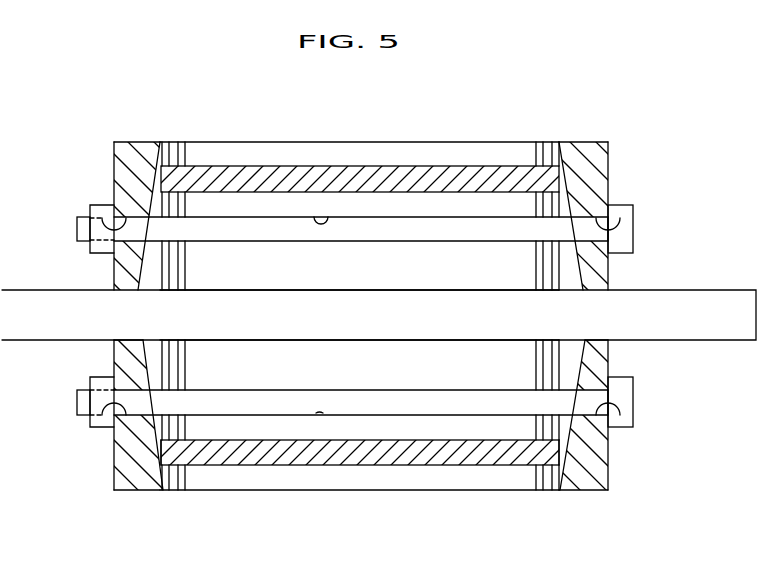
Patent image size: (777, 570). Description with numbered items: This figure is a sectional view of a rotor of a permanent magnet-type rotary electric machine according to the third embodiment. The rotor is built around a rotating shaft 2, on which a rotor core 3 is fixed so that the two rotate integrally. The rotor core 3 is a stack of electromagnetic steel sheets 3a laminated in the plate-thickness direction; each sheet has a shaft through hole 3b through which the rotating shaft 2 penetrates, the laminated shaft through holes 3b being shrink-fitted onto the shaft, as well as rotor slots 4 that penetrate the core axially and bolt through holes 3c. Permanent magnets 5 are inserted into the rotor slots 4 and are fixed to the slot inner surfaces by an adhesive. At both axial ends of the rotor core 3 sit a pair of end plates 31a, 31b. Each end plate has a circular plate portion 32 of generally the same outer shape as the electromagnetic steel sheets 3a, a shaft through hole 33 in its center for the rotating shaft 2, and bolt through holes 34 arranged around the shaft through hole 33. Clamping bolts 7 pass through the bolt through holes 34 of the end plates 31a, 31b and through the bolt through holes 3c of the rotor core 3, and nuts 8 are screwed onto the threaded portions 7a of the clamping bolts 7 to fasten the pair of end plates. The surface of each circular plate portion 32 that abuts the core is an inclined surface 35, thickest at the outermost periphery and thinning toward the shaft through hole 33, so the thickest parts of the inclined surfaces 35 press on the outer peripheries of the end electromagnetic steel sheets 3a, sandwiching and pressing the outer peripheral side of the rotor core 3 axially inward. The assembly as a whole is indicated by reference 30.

The rotating shaft 2 is at (720, 307).
The rotor core 3 is at (233, 148).
The electromagnetic steel sheets 3a is at (181, 145).
The shaft through hole 3b is at (483, 302).
The bolt through holes 3c is at (328, 217).
The rotor slots 4 is at (441, 165).
The permanent magnets 5 is at (278, 175).
The clamping bolts 7 is at (627, 234).
The threaded portions 7a is at (77, 224).
The nuts 8 is at (100, 250).
The stator assembly 30 is at (601, 110).
The end plate 31a is at (110, 140).
The end plate 31b is at (611, 139).
The circular plate portion 32 is at (154, 148).
The shaft through hole 33 is at (127, 340).
The bolt through holes 34 is at (112, 218).
The inclined surface 35 is at (163, 450).